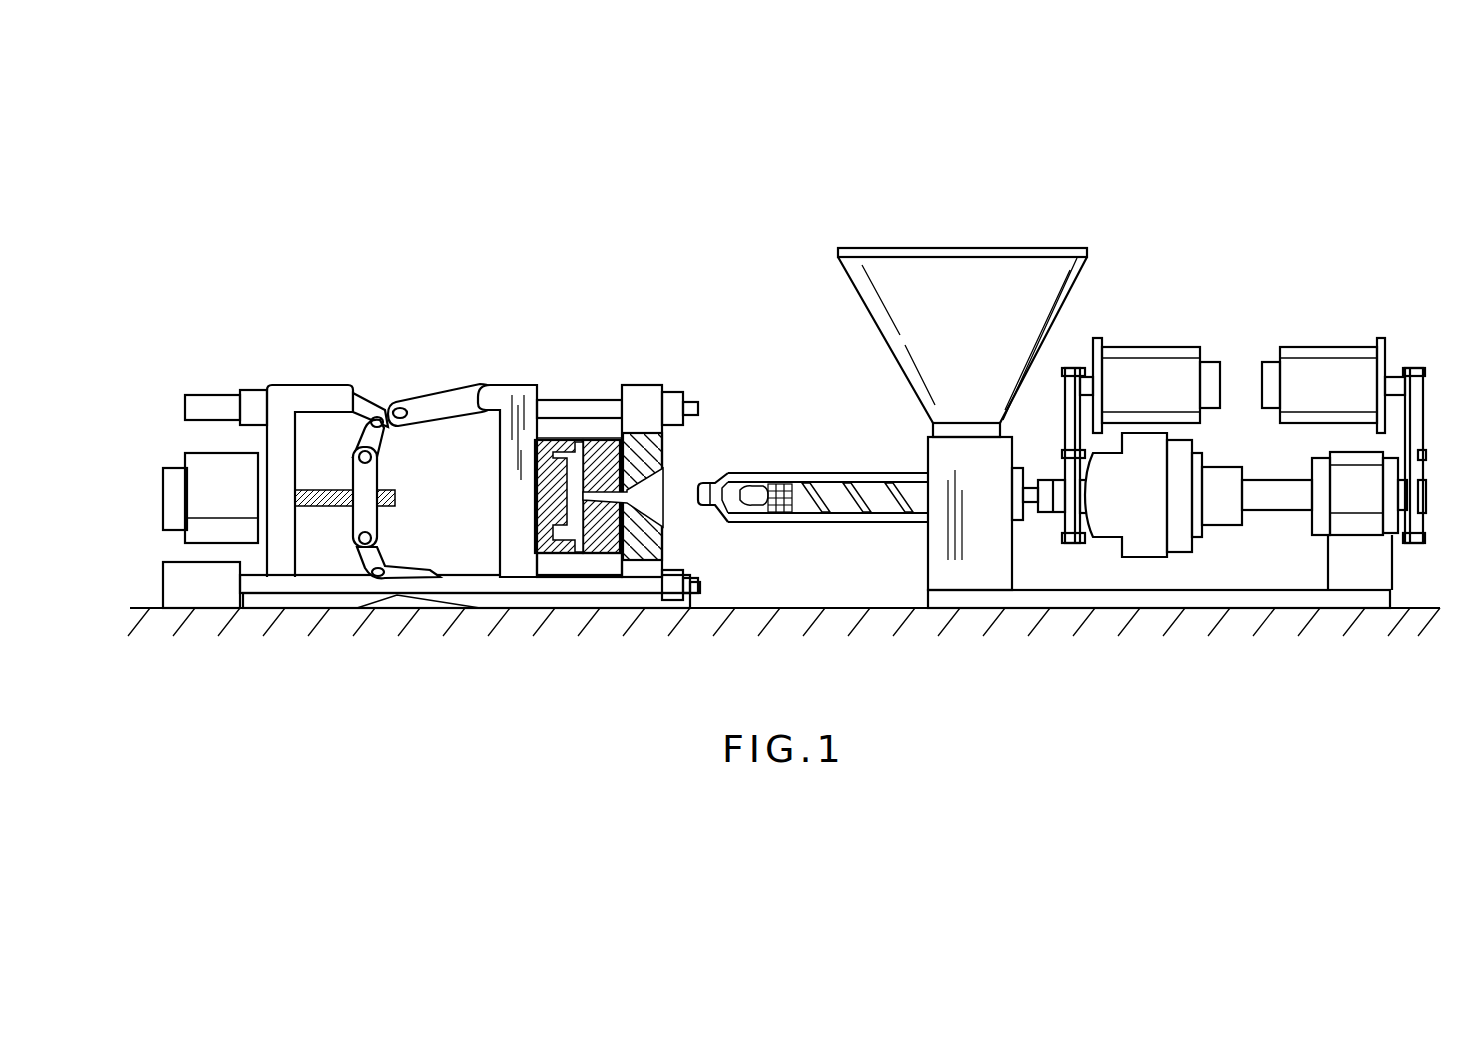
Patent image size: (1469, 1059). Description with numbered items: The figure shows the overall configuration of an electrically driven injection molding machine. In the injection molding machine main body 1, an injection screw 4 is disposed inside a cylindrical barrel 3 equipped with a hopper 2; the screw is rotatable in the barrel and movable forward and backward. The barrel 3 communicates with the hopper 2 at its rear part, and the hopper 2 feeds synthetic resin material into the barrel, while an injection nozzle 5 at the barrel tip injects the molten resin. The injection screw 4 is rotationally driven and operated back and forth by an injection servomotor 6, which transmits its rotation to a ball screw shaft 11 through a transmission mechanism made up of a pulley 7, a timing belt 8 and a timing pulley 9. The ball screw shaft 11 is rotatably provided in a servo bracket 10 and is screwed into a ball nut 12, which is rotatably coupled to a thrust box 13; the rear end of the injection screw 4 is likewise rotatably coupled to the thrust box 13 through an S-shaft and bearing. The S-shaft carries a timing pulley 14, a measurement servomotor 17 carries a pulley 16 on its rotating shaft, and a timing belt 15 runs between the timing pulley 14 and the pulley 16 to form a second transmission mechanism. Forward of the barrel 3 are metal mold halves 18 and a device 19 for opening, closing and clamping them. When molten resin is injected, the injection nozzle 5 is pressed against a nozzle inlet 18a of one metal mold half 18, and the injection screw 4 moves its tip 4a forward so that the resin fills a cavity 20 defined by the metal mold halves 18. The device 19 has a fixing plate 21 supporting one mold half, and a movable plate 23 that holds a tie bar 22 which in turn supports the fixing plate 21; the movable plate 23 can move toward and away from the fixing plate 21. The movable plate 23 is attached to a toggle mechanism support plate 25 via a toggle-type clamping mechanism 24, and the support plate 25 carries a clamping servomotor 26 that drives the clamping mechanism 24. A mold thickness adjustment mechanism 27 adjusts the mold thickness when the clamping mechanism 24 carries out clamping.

The injection molding machine main body 1 is at (800, 390).
The hopper 2 is at (962, 246).
The cylindrical barrel 3 is at (855, 470).
The injection screw 4 is at (877, 500).
The tip of the injection screw 4a is at (752, 490).
The injection nozzle 5 is at (710, 506).
The injection servomotor 6 is at (1327, 348).
The pulley 7 is at (1424, 386).
The timing belt 8 is at (1414, 428).
The timing pulley 9 is at (1427, 497).
The servo bracket 10 is at (1365, 537).
The ball screw shaft 11 is at (1288, 511).
The ball nut 12 is at (1228, 466).
The thrust box 13 is at (1148, 556).
The timing pulley 14 is at (1052, 514).
The timing belt 15 is at (1063, 426).
The pulley 16 is at (1078, 367).
The measurement servomotor 17 is at (1147, 348).
The metal mold halves 18 is at (538, 552).
The nozzle inlet 18a is at (628, 497).
The device for opening/closing and clamping the metal mold halves 19 is at (588, 366).
The cavity 20 is at (575, 546).
The fixing plate 21 is at (645, 387).
The tie bar 22 is at (553, 400).
The movable plate 23 is at (507, 392).
The toggle-type clamping mechanism 24 is at (398, 406).
The toggle mechanism support plate 25 is at (295, 396).
The clamping servomotor 26 is at (192, 458).
The mold thickness adjustment mechanism 27 is at (208, 596).